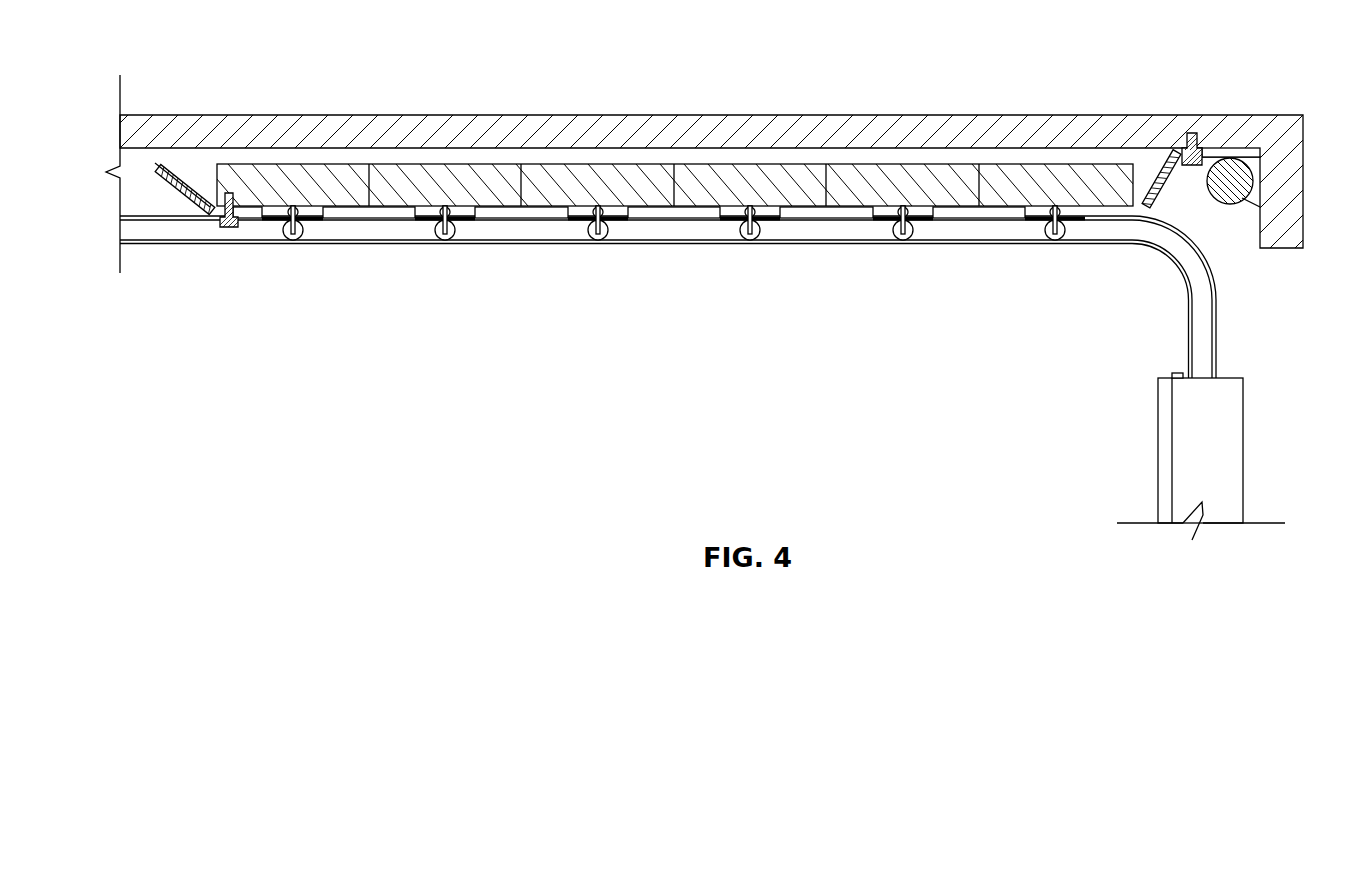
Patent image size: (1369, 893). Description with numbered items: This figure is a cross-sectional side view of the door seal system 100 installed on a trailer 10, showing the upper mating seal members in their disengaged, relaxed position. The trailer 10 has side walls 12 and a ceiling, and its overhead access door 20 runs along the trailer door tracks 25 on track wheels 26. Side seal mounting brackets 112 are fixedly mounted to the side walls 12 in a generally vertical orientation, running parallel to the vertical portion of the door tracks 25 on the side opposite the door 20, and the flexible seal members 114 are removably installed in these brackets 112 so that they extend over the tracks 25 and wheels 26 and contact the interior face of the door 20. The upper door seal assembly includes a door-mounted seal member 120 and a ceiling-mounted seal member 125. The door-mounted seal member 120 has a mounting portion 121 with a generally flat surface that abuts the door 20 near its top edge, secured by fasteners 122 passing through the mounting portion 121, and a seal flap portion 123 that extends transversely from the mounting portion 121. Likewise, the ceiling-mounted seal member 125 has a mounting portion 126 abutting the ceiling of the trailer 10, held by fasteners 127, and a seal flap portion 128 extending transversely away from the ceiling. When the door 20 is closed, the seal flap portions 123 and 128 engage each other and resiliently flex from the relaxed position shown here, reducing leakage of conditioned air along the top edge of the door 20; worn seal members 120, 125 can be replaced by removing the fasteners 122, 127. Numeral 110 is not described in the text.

The trailer 10 is at (393, 108).
The side walls 12 is at (641, 365).
The access door 20 is at (895, 190).
The trailer door tracks 25 is at (407, 245).
The track wheels 26 is at (293, 240).
The door seal system 100 is at (198, 172).
The controller box 110 is at (1137, 496).
The side seal mounting brackets 112 is at (1168, 373).
The flexible seal members 114 is at (1194, 453).
The door-mounted seal member 120 is at (190, 207).
The mounting portion 121 is at (245, 219).
The fasteners 122 is at (232, 226).
The seal flap portion 123 is at (177, 183).
The ceiling-mounted seal member 125 is at (1165, 207).
The mounting portion 126 is at (1208, 156).
The fasteners 127 is at (1192, 134).
The seal flap portion 128 is at (1172, 153).